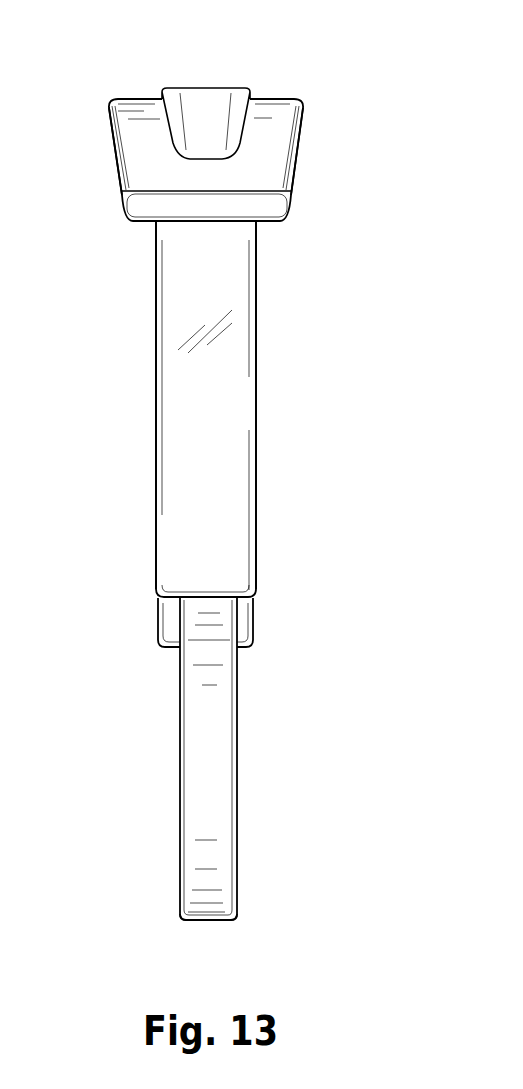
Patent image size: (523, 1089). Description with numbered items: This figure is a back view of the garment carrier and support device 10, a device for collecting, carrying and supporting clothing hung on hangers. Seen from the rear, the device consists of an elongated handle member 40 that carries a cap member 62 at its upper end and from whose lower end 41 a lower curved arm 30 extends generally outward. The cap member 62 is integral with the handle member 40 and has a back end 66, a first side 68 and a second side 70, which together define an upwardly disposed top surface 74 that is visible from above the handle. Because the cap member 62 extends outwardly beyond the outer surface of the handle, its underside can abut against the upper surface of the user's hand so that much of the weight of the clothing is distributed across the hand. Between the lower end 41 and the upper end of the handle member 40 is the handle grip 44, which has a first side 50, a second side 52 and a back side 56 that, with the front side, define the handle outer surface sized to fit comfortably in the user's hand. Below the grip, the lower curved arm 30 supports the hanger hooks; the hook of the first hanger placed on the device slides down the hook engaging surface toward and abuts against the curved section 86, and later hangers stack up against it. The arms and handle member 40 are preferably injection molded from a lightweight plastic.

The garment carrier and support device 10 is at (329, 59).
The lower curved arm 30 is at (210, 785).
The elongated handle member 40 is at (185, 523).
The lower end 41 is at (255, 646).
The handle grip 44 is at (219, 406).
The first side 50 is at (259, 297).
The second side 52 is at (154, 388).
The back side 56 is at (213, 456).
The cap member 62 is at (260, 135).
The back end 66 is at (154, 201).
The first side 68 is at (307, 138).
The second side 70 is at (109, 163).
The top surface 74 is at (156, 149).
The curved section 86 is at (176, 915).